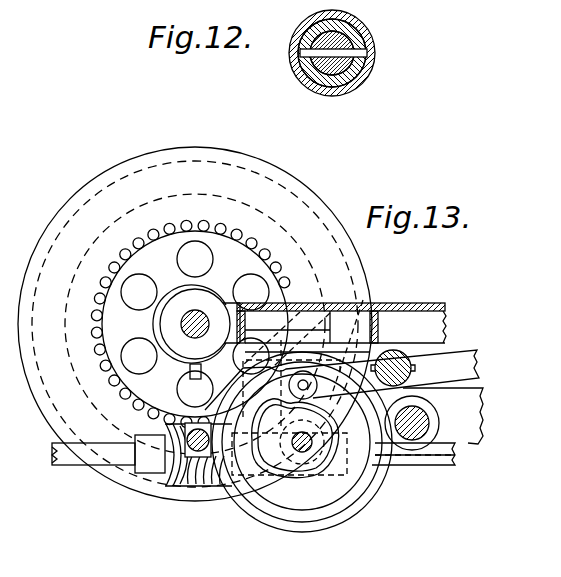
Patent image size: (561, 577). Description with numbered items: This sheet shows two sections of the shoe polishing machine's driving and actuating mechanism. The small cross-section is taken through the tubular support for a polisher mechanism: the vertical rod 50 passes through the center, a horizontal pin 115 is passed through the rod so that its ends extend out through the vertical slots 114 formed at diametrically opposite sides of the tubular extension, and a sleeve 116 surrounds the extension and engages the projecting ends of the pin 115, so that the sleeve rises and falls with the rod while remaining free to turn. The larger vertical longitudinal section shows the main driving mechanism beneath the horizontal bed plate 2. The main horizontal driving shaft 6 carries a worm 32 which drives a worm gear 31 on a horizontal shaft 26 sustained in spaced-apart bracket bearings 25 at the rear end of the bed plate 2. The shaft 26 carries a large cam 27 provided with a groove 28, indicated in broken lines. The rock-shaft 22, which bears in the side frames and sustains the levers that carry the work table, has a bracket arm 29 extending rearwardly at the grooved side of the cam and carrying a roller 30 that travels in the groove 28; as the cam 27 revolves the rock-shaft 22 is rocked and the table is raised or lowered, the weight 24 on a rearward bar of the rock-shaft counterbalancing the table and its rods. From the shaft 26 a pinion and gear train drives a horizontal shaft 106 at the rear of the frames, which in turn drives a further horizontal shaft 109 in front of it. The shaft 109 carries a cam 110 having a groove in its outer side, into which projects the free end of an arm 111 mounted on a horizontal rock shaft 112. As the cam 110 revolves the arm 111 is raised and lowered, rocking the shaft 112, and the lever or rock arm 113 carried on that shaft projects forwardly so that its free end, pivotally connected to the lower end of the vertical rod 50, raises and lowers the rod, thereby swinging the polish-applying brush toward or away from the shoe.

In FIG. 13, the bed plate 2 is at (437, 303).
In FIG. 13, the main horizontal driving shaft 6 is at (65, 461).
In FIG. 13, the rock-shaft 22 is at (421, 418).
In FIG. 13, the weight 24 is at (478, 440).
In FIG. 13, the bracket bearings 25 is at (219, 314).
In FIG. 13, the horizontal shaft 26 is at (190, 322).
In FIG. 13, the cam 27 is at (113, 484).
In FIG. 13, the groove 28 is at (87, 200).
In FIG. 13, the bracket arm 29 is at (395, 468).
In FIG. 13, the roller 30 is at (200, 488).
In FIG. 13, the worm gear 31 is at (114, 263).
In FIG. 13, the worm 32 is at (190, 483).
In FIG. 12, the vertical rod 50 is at (338, 62).
In FIG. 13, the horizontal shaft 106 is at (192, 429).
In FIG. 13, the horizontal shaft 109 is at (304, 452).
In FIG. 13, the cam 110 is at (353, 503).
In FIG. 13, the arm 111 is at (333, 360).
In FIG. 13, the rock shaft 112 is at (396, 362).
In FIG. 13, the lever or rock arm 113 is at (342, 380).
In FIG. 12, the vertical slots 114 is at (349, 42).
In FIG. 12, the horizontal pin 115 is at (361, 53).
In FIG. 12, the sleeve 116 is at (297, 72).